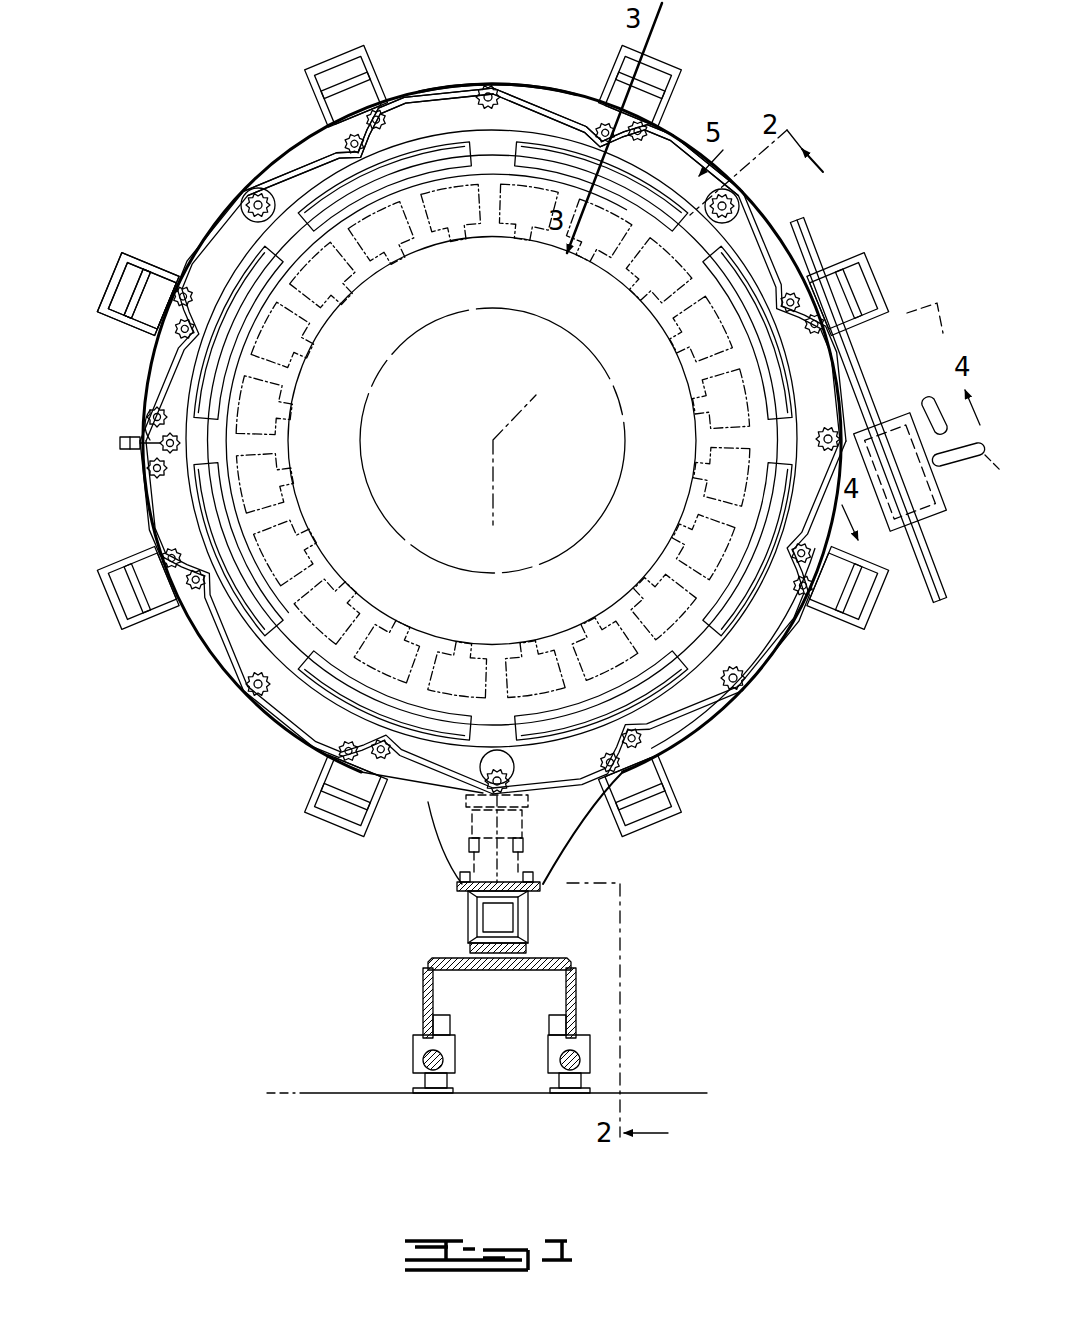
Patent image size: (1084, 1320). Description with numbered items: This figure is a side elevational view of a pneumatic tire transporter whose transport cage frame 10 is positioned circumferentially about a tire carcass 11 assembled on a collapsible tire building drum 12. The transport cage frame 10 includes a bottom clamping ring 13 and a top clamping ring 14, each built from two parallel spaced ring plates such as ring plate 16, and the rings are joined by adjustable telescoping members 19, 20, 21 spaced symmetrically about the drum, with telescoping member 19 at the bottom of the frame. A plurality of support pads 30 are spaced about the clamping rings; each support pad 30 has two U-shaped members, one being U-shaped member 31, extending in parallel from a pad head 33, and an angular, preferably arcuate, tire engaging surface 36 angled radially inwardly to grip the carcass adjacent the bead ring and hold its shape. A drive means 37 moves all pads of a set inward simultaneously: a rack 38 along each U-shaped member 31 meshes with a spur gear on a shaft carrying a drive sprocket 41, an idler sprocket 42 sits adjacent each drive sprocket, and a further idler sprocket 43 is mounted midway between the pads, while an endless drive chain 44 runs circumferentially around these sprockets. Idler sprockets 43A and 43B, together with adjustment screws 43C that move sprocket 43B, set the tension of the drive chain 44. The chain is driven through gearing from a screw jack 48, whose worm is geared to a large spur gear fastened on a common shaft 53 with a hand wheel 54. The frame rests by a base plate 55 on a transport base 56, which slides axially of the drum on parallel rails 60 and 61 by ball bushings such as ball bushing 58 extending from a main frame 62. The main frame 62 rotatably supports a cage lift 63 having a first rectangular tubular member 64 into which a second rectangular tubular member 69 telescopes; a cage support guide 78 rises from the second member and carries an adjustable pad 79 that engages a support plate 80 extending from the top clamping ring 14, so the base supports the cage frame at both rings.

The transport cage frame 10 is at (560, 856).
The tire carcass 11 is at (718, 708).
The collapsible tire building drum 12 is at (760, 655).
The bottom clamping ring 13 is at (406, 92).
The top clamping ring 14 is at (420, 795).
The ring plate 16 is at (552, 92).
The adjustable telescoping member 19 is at (516, 762).
The adjustable telescoping member 20 is at (742, 212).
The adjustable telescoping member 21 is at (282, 186).
The support pad 30 is at (530, 130).
The U-shaped member 31 is at (148, 258).
The pad head 33 is at (522, 165).
The tire engaging surface 36 is at (440, 178).
The drive means 37 is at (938, 408).
The rack 38 is at (128, 292).
The drive sprocket 41 is at (650, 137).
The idler sprocket 42 is at (594, 124).
The idler sprocket 43 is at (487, 86).
The idler sprocket 43A is at (160, 410).
The idler sprocket 43B is at (148, 420).
The adjustment screw 43C is at (122, 446).
The endless drive chain 44 is at (425, 88).
The screw jack 48 is at (935, 578).
The common shaft 53 is at (900, 410).
The hand wheel 54 is at (960, 470).
The base plate 55 is at (458, 872).
The transport base 56 is at (412, 962).
The ball bushing 58 is at (413, 1050).
The rail 60 is at (560, 1058).
The rail 61 is at (422, 1062).
The main frame 62 is at (422, 995).
The cage lift 63 is at (452, 890).
The first rectangular tubular member 64 is at (468, 920).
The second rectangular tubular member 69 is at (520, 915).
The cage support guide 78 is at (465, 855).
The adjustable pad 79 is at (548, 800).
The support plate 80 is at (468, 802).